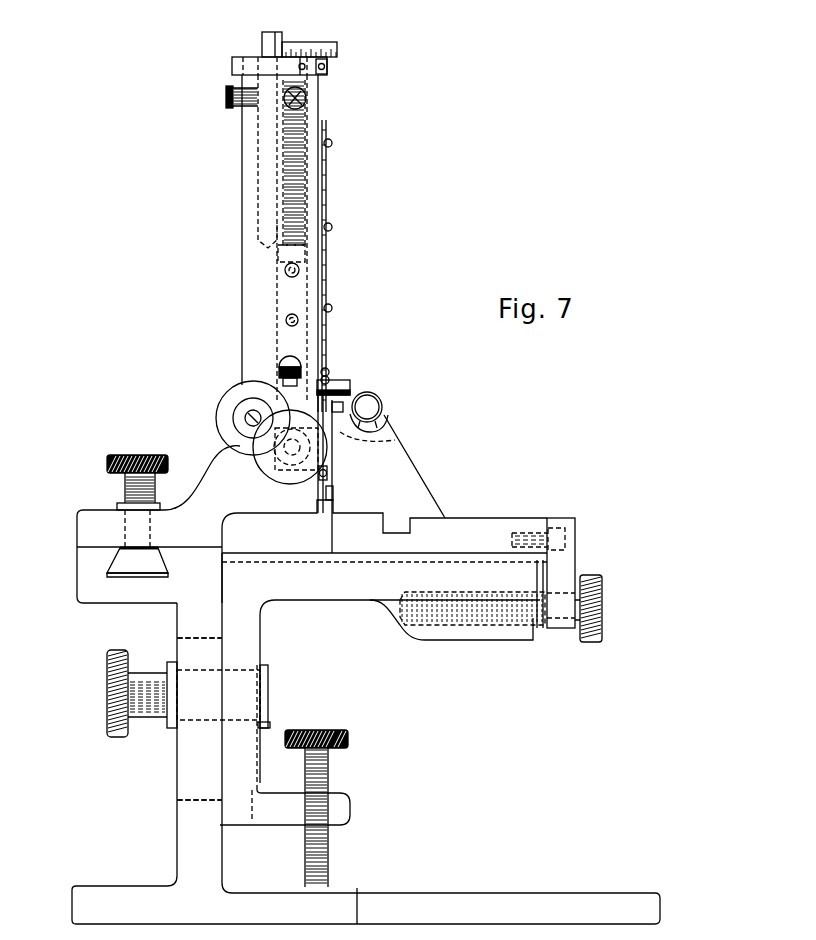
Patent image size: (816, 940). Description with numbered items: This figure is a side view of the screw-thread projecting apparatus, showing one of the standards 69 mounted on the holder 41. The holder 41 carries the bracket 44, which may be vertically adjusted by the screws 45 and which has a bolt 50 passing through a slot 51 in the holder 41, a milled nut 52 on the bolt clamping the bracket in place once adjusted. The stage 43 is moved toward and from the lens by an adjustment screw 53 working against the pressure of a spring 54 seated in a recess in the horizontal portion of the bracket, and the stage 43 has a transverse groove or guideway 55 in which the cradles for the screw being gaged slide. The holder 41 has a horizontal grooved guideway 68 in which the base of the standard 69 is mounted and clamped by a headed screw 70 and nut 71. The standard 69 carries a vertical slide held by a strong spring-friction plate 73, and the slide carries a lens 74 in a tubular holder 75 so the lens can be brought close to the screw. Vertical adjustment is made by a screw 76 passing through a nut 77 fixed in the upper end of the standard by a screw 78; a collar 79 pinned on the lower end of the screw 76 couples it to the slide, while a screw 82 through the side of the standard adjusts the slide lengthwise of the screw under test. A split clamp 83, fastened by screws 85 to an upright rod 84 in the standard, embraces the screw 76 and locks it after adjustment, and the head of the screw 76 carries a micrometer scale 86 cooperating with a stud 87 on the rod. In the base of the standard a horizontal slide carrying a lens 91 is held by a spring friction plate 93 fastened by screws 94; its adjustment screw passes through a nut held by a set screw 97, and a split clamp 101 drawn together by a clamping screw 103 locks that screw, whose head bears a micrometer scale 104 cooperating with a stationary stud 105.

The holder 41 is at (177, 828).
The stage 43 is at (488, 518).
The bracket 44 is at (315, 600).
The screws 45 is at (340, 730).
The bolt 50 is at (268, 691).
The slot 51 is at (180, 638).
The milled nut 52 is at (150, 717).
The adjustment screw 53 is at (590, 642).
The spring 54 is at (510, 625).
The transverse groove or guideway 55 is at (428, 518).
The horizontal grooved guideway 68 is at (77, 575).
The standard 69 is at (242, 318).
The headed screw 70 is at (122, 525).
The nut 71 is at (146, 455).
The spring-friction plate 73 is at (326, 283).
The lens 74 is at (352, 380).
The tubular holder 75 is at (330, 383).
The screw 76 is at (300, 132).
The nut 77 is at (306, 110).
The screw 78 is at (306, 96).
The collar 79 is at (305, 252).
The screw 82 is at (300, 358).
The split clamp 83 is at (232, 63).
The upright rod 84 is at (258, 151).
The screws 85 is at (327, 66).
The micrometer scale 86 is at (337, 50).
The stud 87 is at (272, 33).
The lens 91 is at (362, 428).
The spring friction plate 93 is at (336, 494).
The screws 94 is at (330, 474).
The set screw 97 is at (279, 372).
The split clamp 101 is at (218, 408).
The clamping screw 103 is at (320, 445).
The micrometer scale 104 is at (270, 480).
The stationary stud 105 is at (253, 422).